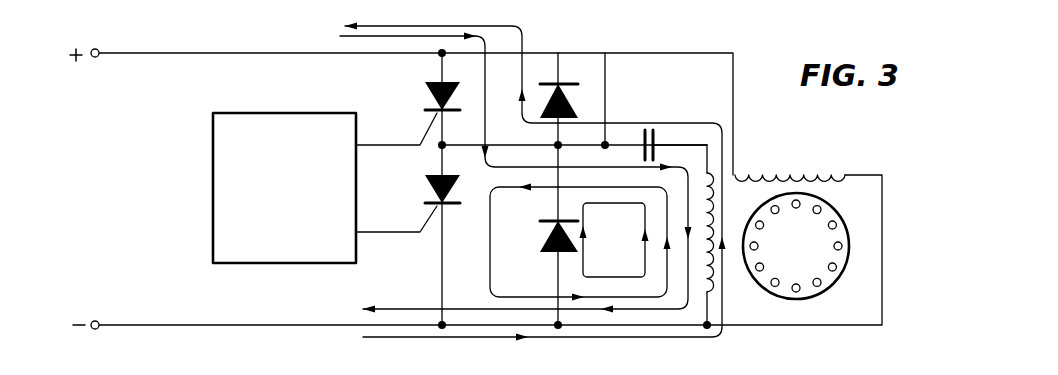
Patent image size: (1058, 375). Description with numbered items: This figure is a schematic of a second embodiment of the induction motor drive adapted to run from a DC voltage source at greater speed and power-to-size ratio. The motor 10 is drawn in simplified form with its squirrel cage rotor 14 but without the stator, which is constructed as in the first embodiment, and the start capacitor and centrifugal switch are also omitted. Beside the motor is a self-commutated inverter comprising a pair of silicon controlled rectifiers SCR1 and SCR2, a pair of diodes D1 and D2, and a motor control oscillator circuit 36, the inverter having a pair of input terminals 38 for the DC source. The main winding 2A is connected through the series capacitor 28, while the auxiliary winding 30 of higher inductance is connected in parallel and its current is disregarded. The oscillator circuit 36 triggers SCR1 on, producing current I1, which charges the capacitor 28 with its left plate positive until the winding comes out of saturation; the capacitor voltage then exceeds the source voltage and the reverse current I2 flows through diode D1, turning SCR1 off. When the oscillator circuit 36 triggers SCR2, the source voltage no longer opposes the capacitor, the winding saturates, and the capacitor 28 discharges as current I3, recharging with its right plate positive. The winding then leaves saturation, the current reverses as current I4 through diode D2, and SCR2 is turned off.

The AC induction motor 10 is at (832, 293).
The squirrel cage rotor 14 is at (846, 230).
The winding coil 2A is at (709, 292).
The capacitor 28 is at (650, 128).
The auxiliary winding 30 is at (797, 176).
The motor control oscillator circuit 36 is at (218, 266).
The input terminals 38 is at (93, 58).
The silicon controlled rectifier SCR1 is at (427, 89).
The silicon controlled rectifier SCR2 is at (427, 185).
The diode D1 is at (588, 73).
The diode D2 is at (543, 242).
The current I1 is at (467, 310).
The reverse current I2 is at (400, 336).
The current I3 is at (528, 297).
The current I4 is at (617, 277).